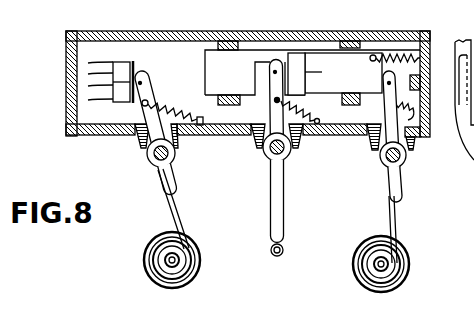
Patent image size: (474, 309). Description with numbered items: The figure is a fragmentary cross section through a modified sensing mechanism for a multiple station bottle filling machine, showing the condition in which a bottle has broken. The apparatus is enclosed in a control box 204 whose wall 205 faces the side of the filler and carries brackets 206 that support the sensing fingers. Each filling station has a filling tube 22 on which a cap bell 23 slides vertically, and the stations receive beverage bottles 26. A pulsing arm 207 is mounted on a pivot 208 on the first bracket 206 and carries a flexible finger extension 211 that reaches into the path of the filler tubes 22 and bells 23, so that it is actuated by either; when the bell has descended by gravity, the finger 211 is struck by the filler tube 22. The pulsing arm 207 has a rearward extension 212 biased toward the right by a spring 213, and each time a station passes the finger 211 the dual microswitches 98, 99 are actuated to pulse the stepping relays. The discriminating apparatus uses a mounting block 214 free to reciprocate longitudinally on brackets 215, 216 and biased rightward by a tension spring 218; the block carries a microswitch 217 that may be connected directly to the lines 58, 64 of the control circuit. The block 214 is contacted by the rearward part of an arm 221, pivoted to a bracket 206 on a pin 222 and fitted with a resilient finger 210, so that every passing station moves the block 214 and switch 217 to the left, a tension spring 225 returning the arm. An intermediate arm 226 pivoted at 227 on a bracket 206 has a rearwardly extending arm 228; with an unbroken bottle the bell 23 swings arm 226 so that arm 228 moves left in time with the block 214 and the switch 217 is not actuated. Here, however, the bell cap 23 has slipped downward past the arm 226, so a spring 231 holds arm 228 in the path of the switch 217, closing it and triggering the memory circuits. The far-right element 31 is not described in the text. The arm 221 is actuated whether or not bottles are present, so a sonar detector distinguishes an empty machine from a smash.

The filling tube 22 is at (168, 260).
The cap bell 23 is at (148, 277).
The beverage bottle 26 is at (196, 246).
The wheel 31 is at (464, 80).
The line 58 is at (305, 62).
The line 64 is at (322, 72).
The microswitch 98 is at (125, 66).
The microswitch 99 is at (118, 103).
The control box 204 is at (277, 31).
The wall 205 is at (242, 132).
The bracket 206 is at (138, 142).
The pulsing arm 207 is at (176, 181).
The pivot 208 is at (153, 157).
The resilient finger 210 is at (397, 223).
The flexible finger extension 211 is at (166, 212).
The rearward extension 212 is at (147, 88).
The spring 213 is at (168, 107).
The mounting block 214 is at (334, 55).
The bracket 215 is at (236, 32).
The bracket 216 is at (357, 43).
The microswitch 217 is at (295, 58).
The tension spring 218 is at (398, 55).
The arm 221 is at (403, 194).
The pin 222 is at (383, 160).
The tension spring 225 is at (420, 136).
The intermediate arm 226 is at (284, 192).
The pivot 227 is at (271, 163).
The rearwardly extending arm 228 is at (270, 116).
The spring 231 is at (316, 117).